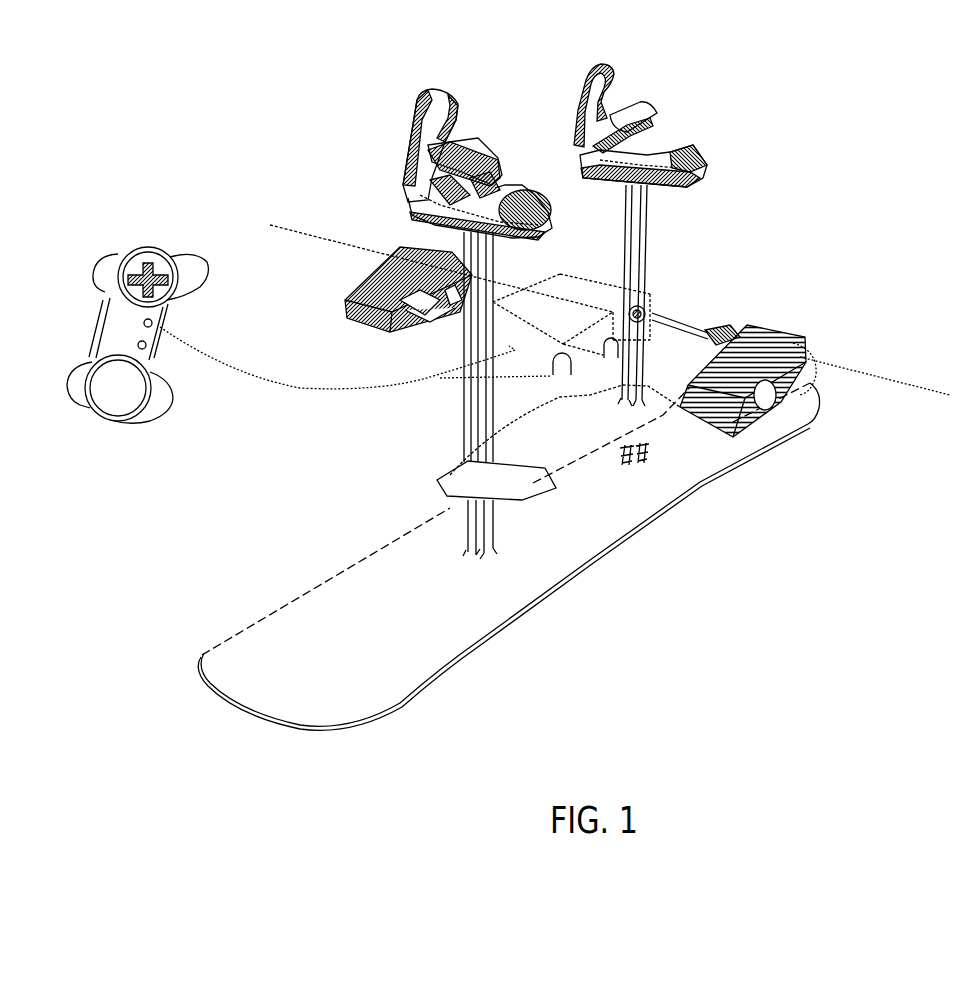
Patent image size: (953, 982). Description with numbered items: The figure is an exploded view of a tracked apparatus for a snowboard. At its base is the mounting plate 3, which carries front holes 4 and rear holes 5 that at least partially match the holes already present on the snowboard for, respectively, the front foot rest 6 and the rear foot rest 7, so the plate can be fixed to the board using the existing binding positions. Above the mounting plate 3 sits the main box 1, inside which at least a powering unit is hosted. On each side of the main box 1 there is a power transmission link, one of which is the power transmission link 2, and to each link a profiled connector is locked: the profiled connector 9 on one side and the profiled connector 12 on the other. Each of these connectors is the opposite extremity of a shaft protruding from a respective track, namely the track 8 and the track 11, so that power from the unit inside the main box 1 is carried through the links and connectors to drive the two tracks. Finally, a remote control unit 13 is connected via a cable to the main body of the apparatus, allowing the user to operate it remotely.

The main box 1 is at (560, 274).
The power transmission link 2 is at (645, 311).
The mounting plate 3 is at (587, 460).
The front holes 4 is at (458, 494).
The rear holes 5 is at (656, 390).
The front foot rest 6 is at (412, 148).
The rear foot rest 7 is at (663, 145).
The track 8 is at (778, 325).
The profiled connector 9 is at (727, 330).
The track 11 is at (408, 250).
The profiled connector 12 is at (455, 315).
The remote control unit 13 is at (156, 242).